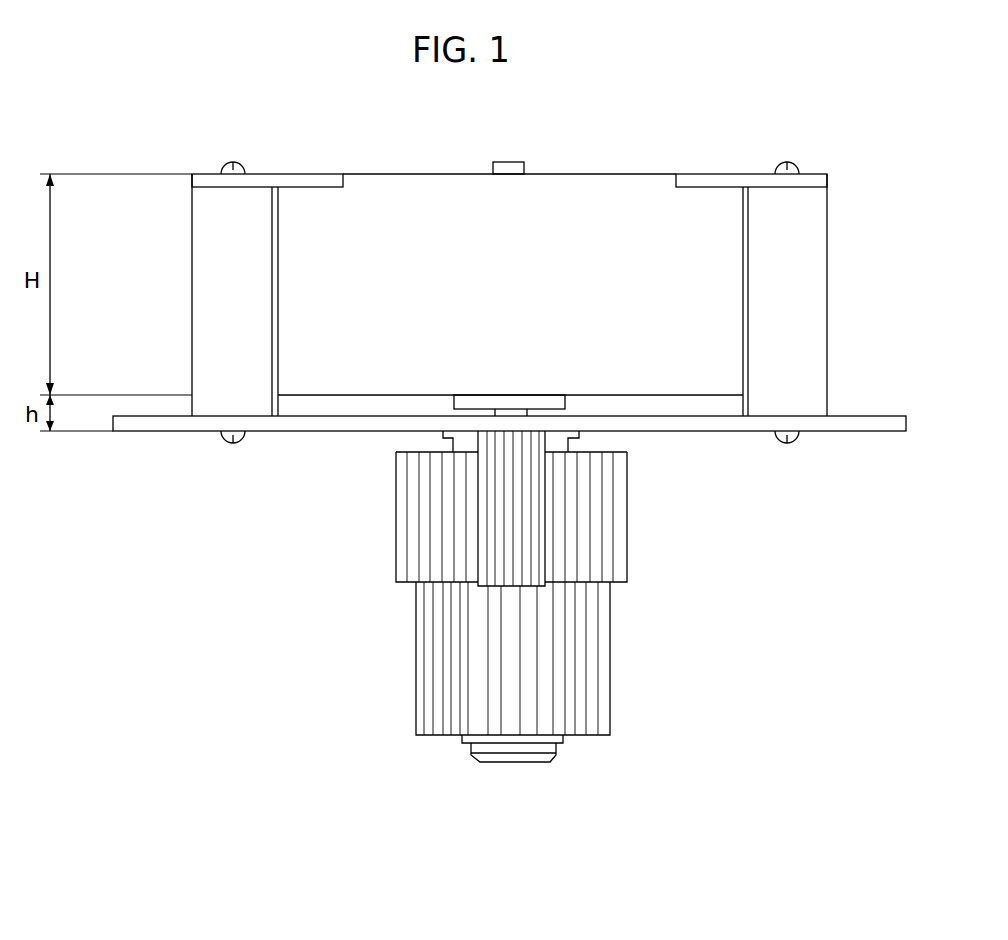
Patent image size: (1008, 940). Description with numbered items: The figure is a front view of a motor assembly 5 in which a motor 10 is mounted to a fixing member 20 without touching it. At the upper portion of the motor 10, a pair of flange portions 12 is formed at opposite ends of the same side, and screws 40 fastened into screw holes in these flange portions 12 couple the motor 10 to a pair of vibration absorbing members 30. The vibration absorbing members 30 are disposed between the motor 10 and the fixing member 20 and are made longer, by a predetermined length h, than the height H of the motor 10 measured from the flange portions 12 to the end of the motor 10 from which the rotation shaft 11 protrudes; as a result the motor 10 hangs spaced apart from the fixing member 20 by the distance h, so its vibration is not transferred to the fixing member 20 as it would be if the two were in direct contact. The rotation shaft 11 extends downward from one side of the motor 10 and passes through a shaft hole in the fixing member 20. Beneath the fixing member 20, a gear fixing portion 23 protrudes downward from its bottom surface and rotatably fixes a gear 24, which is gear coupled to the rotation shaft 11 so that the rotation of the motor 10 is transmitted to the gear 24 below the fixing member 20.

The motor assembly 5 is at (186, 600).
The motor 10 is at (607, 188).
The rotation shaft 11 is at (535, 530).
The flange portions 12 is at (717, 178).
The fixing member 20 is at (878, 418).
The gear fixing portion 23 is at (567, 452).
The gear 24 is at (587, 660).
The vibration absorbing members 30 is at (827, 267).
The screws 40 is at (796, 168).